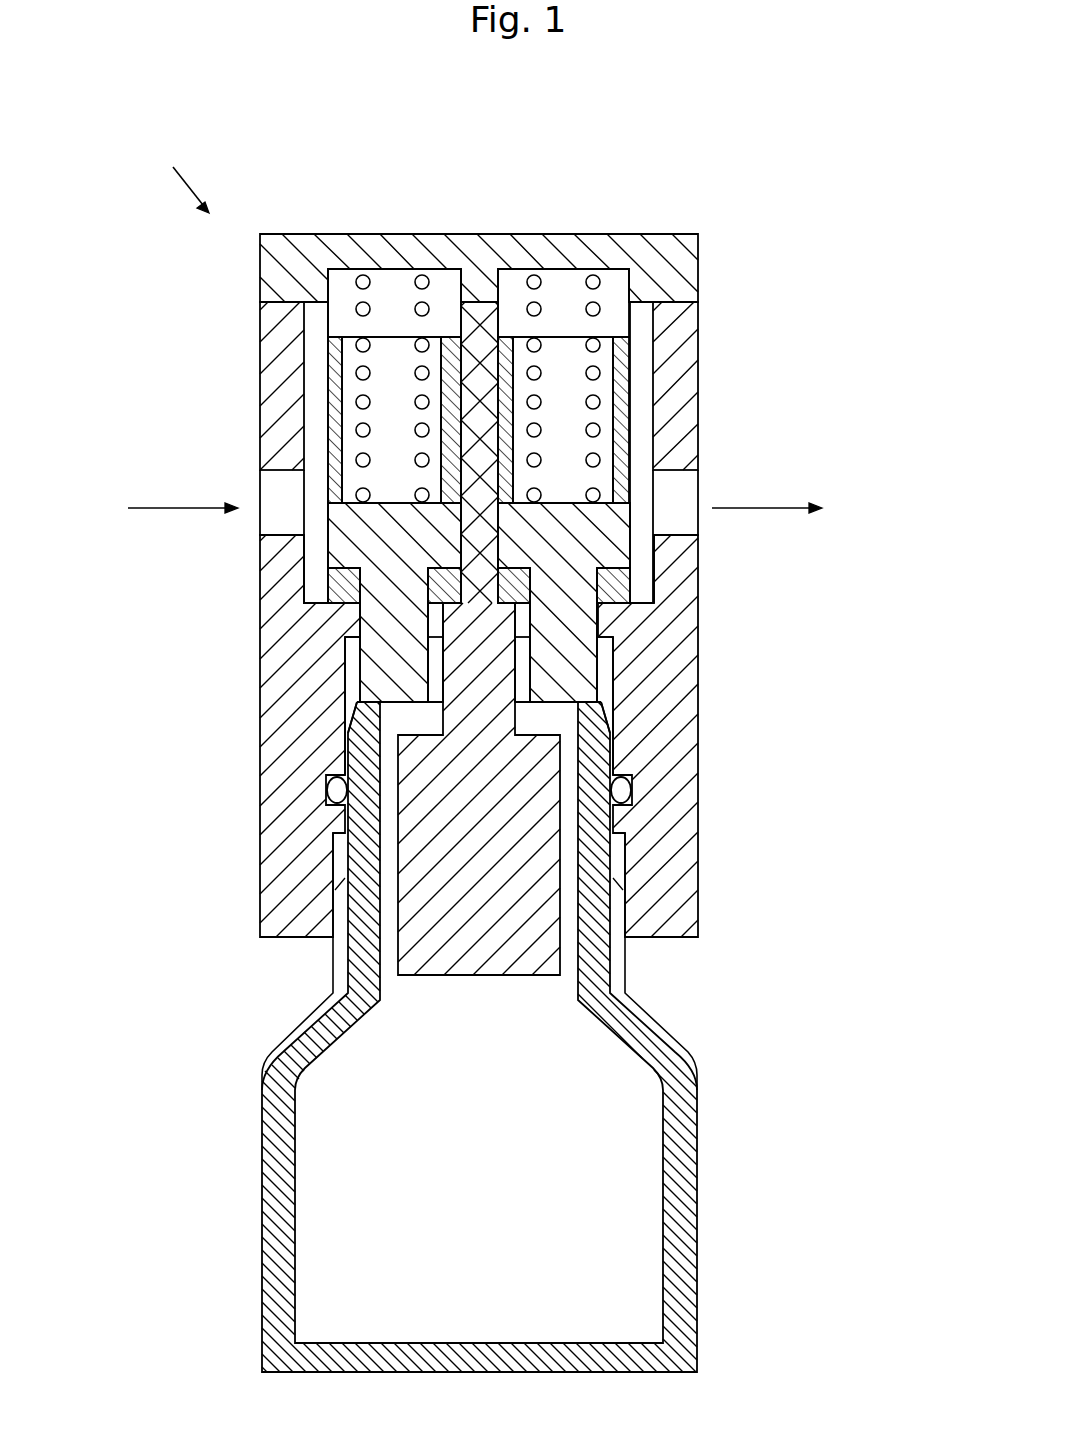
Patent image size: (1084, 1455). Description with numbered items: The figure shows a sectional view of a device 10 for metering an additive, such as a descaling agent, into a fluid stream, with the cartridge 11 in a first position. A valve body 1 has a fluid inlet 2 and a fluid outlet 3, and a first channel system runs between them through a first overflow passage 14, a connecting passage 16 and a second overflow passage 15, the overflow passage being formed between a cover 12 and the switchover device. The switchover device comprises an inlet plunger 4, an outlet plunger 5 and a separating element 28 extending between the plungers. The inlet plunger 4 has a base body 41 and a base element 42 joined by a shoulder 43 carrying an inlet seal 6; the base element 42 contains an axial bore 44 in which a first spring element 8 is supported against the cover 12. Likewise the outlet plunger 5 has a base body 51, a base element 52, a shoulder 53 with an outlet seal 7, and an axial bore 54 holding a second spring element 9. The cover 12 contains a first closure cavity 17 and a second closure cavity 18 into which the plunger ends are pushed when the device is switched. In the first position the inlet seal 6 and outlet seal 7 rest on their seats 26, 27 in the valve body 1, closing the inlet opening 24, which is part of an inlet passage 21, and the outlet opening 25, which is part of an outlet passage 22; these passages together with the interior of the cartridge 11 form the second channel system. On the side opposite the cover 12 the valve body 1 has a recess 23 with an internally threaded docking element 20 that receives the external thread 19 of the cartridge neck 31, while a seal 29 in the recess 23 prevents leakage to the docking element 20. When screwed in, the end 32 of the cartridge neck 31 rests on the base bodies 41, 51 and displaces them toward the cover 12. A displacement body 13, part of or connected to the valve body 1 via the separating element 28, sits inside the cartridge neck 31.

The valve body 1 is at (682, 708).
The fluid inlet 2 is at (288, 512).
The fluid outlet 3 is at (690, 518).
The inlet plunger 4 is at (475, 494).
The outlet plunger 5 is at (607, 538).
The inlet seal 6 is at (377, 640).
The outlet seal 7 is at (525, 590).
The first spring element 8 is at (360, 432).
The second spring element 9 is at (593, 427).
The device 10 is at (176, 172).
The cartridge 11 is at (595, 947).
The cover 12 is at (687, 265).
The displacement body 13 is at (480, 977).
The first overflow passage 14 is at (317, 382).
The second overflow passage 15 is at (642, 380).
The connecting passage 16 is at (481, 322).
The first closure cavity 17 is at (350, 283).
The second closure cavity 18 is at (623, 287).
The external thread 19 is at (343, 960).
The docking element 20 is at (340, 860).
The inlet passage 21 is at (352, 660).
The outlet passage 22 is at (563, 657).
The recess 23 is at (345, 742).
The inlet opening 24 is at (344, 655).
The outlet opening 25 is at (603, 630).
The seat 26 is at (330, 602).
The seat 27 is at (607, 610).
The separating element 28 is at (477, 422).
The seal 29 is at (333, 782).
The cartridge neck 31 is at (612, 758).
The end of the cartridge neck 32 is at (622, 672).
The base body 41 is at (365, 630).
The base element 42 is at (378, 538).
The shoulder 43 is at (345, 583).
The axial bore 44 is at (340, 350).
The base body 51 is at (643, 653).
The base element 52 is at (585, 523).
The shoulder 53 is at (615, 585).
The axial bore 54 is at (615, 342).